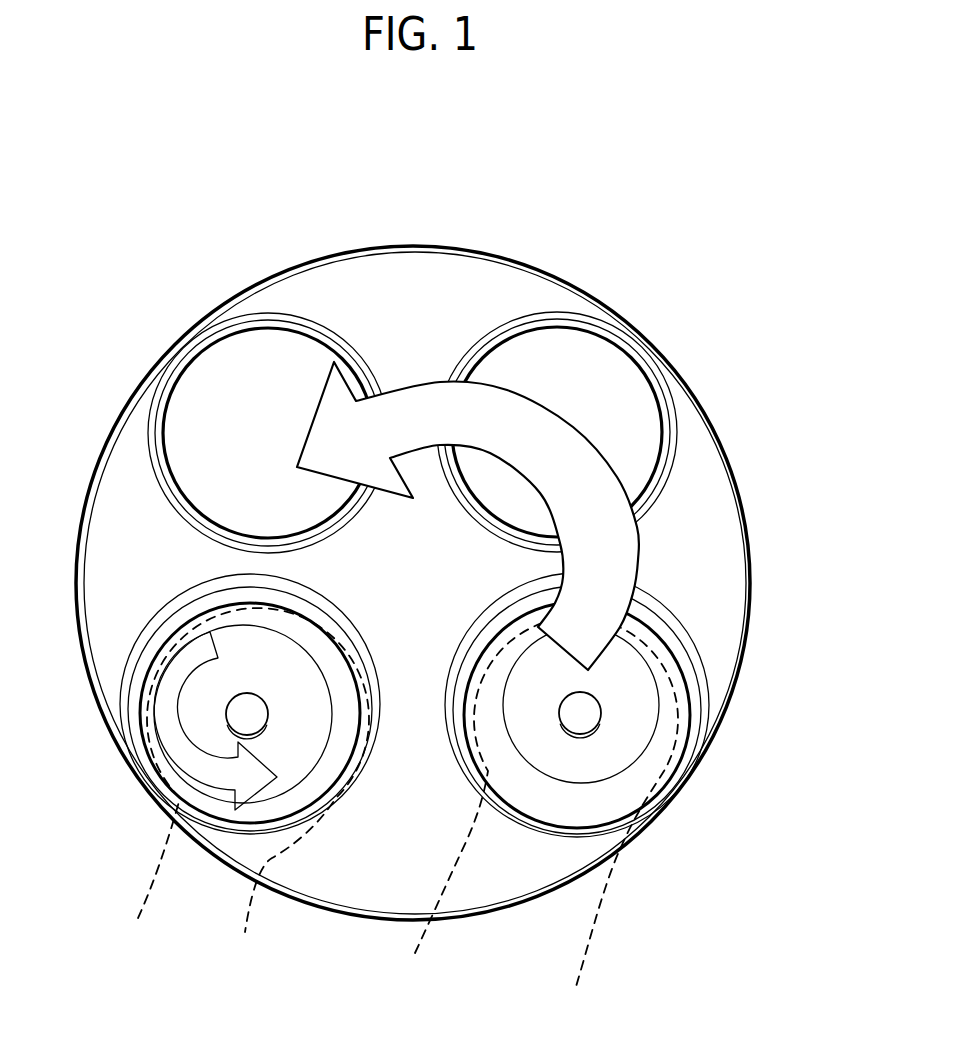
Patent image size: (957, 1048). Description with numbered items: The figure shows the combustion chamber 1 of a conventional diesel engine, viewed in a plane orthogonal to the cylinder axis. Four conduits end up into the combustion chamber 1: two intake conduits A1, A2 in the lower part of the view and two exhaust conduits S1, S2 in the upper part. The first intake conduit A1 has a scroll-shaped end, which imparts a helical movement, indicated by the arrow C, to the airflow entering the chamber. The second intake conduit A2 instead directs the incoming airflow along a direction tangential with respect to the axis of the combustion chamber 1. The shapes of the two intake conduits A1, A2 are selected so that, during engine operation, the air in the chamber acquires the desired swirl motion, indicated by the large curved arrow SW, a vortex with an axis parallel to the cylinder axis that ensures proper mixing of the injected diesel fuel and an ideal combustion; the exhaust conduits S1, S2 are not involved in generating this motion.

The combustion chamber 1 is at (722, 573).
The first exhaust conduit S1 is at (255, 327).
The second exhaust conduit S2 is at (628, 352).
The swirl motion SW is at (410, 403).
The helical movement C is at (166, 717).
The first intake conduit A1 is at (167, 893).
The second intake conduit A2 is at (582, 930).